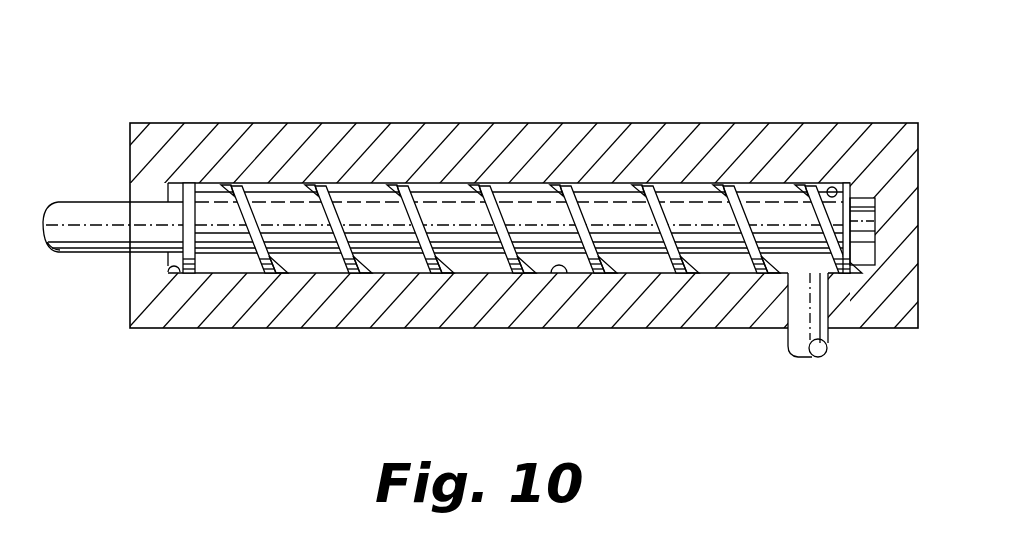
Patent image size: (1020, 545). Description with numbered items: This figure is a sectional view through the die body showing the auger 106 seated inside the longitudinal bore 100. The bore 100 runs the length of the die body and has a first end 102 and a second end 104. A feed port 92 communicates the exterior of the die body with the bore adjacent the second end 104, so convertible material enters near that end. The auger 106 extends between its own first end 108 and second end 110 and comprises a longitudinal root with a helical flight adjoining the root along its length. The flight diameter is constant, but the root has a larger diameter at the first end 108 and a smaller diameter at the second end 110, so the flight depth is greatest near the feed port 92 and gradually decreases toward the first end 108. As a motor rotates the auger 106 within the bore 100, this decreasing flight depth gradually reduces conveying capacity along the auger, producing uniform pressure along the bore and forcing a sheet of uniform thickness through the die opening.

The feed port 92 is at (788, 344).
The longitudinal bore 100 is at (551, 275).
The first end 102 is at (168, 258).
The second end 104 is at (833, 213).
The auger 106 is at (98, 212).
The first end 108 is at (225, 257).
The second end 110 is at (782, 220).